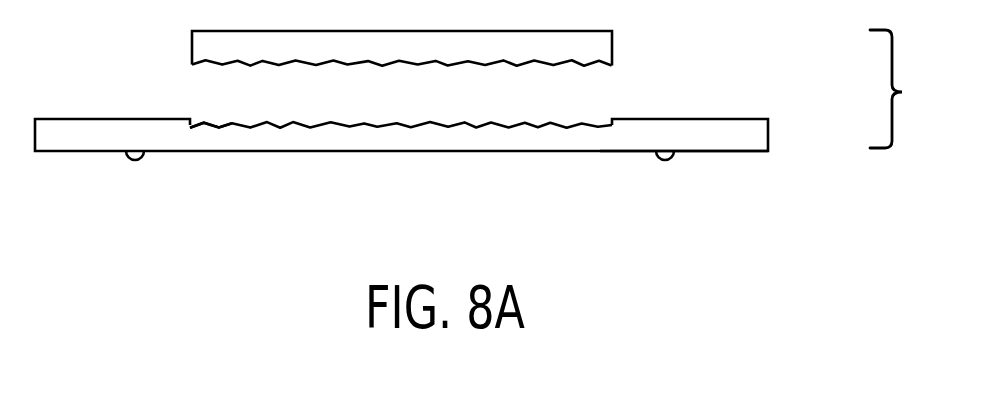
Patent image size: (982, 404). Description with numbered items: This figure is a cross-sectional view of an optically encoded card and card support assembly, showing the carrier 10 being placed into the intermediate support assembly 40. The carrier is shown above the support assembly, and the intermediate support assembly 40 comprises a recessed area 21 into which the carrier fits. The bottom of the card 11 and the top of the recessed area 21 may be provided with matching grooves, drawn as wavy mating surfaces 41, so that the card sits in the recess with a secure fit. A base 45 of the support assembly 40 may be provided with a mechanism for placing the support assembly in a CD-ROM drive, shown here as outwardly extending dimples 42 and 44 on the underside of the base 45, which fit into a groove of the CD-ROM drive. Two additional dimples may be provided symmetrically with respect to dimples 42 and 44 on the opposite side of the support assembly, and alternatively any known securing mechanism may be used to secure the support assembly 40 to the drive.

The carrier 10 is at (587, 50).
The card 11 is at (585, 65).
The recessed area 21 is at (223, 118).
The intermediate support assembly 40 is at (743, 135).
The roughened recess surface 41 is at (407, 123).
The outwardly extending dimple 42 is at (657, 158).
The outwardly extending dimple 44 is at (142, 158).
The base 45 is at (715, 153).